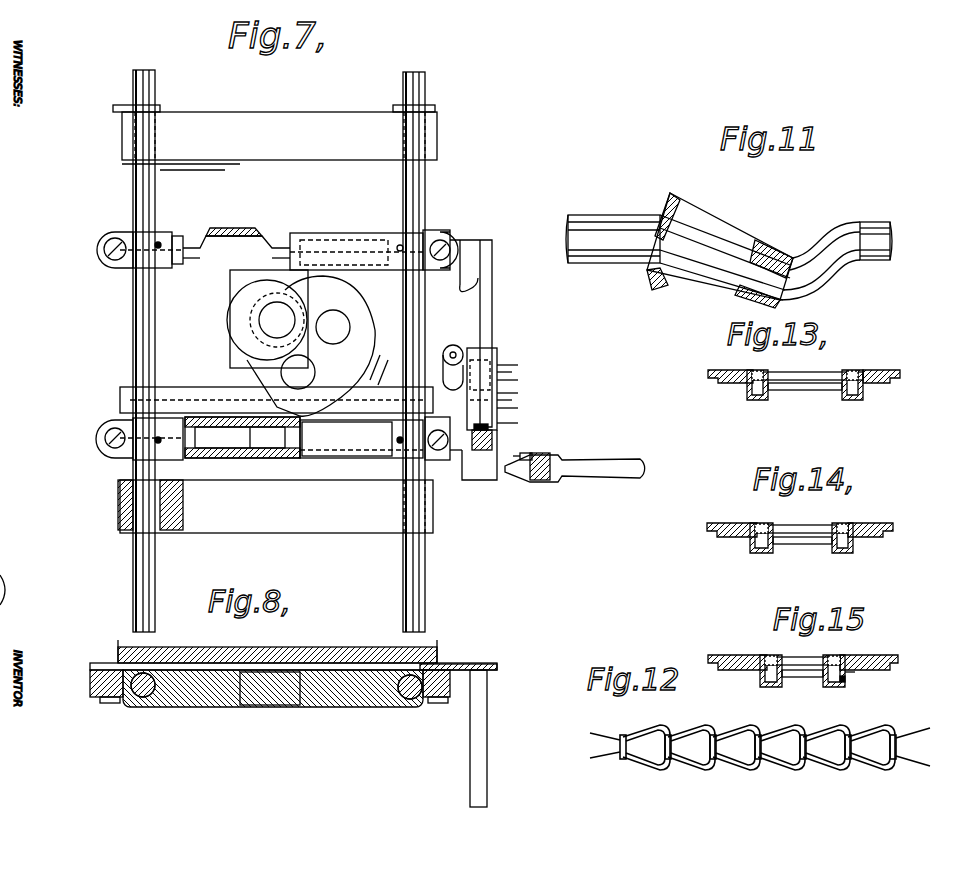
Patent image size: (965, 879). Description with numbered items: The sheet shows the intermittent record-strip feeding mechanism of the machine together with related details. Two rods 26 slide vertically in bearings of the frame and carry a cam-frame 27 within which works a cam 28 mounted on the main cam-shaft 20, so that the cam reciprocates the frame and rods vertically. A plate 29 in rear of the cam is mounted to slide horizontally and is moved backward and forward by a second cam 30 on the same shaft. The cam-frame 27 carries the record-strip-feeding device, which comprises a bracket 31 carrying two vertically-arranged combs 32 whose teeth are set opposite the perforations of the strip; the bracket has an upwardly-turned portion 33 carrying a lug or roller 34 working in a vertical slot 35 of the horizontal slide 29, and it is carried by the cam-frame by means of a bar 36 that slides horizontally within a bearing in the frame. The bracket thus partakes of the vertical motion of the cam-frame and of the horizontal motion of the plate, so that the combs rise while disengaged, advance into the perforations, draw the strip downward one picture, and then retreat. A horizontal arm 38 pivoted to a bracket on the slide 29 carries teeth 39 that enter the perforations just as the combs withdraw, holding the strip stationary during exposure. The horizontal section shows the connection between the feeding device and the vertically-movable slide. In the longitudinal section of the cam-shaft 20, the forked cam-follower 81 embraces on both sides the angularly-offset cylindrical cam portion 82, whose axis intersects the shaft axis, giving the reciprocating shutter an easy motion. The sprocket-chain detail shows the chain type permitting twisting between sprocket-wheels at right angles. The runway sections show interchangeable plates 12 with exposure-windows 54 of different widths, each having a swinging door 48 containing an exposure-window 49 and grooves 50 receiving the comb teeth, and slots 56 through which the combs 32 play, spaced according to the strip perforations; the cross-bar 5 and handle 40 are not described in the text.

In FIG. 7, the cross bar 5 is at (300, 540).
In FIG. 8, the cross bar 5 is at (310, 662).
In FIG. 13, the guideway 12 is at (893, 371).
In FIG. 14, the guideway 12 is at (876, 524).
In FIG. 15, the guideway 12 is at (882, 656).
In FIG. 7, the main cam-shaft 20 is at (277, 320).
In FIG. 11, the main cam-shaft 20 is at (596, 225).
In FIG. 7, the rods 26 is at (157, 88).
In FIG. 8, the rods 26 is at (143, 697).
In FIG. 7, the cam-frame 27 is at (352, 492).
In FIG. 8, the cam-frame 27 is at (312, 705).
In FIG. 7, the cam 28 is at (317, 346).
In FIG. 7, the plate 29 is at (500, 235).
In FIG. 7, the second cam 30 is at (245, 310).
In FIG. 7, the bracket 31 is at (472, 472).
In FIG. 8, the bracket 31 is at (478, 752).
In FIG. 7, the combs 32 is at (518, 390).
In FIG. 7, the upwardly-turned portion 33 is at (488, 350).
In FIG. 7, the lug or roller 34 is at (460, 345).
In FIG. 7, the vertical slot 35 is at (470, 290).
In FIG. 7, the bar 36 is at (242, 437).
In FIG. 8, the bar 36 is at (240, 700).
In FIG. 7, the horizontal arm 38 is at (512, 457).
In FIG. 7, the teeth 39 is at (550, 458).
In FIG. 7, the lever handle 40 is at (612, 475).
In FIG. 13, the swinging door 48 is at (758, 400).
In FIG. 14, the swinging door 48 is at (843, 553).
In FIG. 15, the swinging door 48 is at (772, 687).
In FIG. 13, the exposure-window 49 is at (812, 392).
In FIG. 14, the exposure-window 49 is at (798, 545).
In FIG. 15, the exposure-window 49 is at (802, 673).
In FIG. 15, the grooves 50 is at (846, 678).
In FIG. 13, the exposure-window 54 is at (815, 376).
In FIG. 15, the exposure-window 54 is at (805, 662).
In FIG. 13, the slots 56 is at (855, 376).
In FIG. 14, the slots 56 is at (760, 524).
In FIG. 15, the slots 56 is at (771, 656).
In FIG. 11, the cam-follower 81 is at (790, 255).
In FIG. 11, the cam portion 82 is at (735, 255).